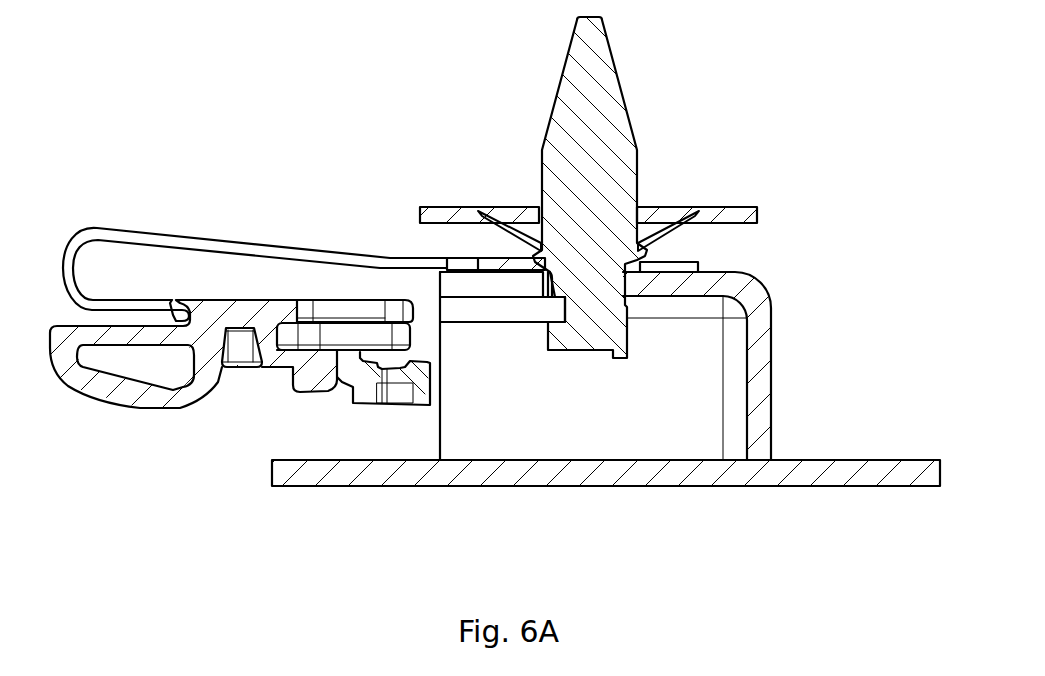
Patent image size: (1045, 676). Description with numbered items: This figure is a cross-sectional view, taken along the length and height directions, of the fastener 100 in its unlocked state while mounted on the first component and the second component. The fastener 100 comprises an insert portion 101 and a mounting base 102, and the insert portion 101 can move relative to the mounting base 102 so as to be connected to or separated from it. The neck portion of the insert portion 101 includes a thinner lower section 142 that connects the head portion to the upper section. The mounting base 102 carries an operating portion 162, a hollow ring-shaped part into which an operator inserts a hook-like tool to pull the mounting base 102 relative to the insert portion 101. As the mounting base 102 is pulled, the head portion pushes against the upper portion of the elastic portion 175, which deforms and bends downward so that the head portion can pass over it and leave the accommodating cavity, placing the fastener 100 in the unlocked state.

The fastener 100 is at (522, 338).
The insert portion 101 is at (623, 164).
The mounting base 102 is at (522, 338).
The lower section 142 is at (626, 307).
The operating portion 162 is at (182, 397).
The elastic portion 175 is at (405, 375).